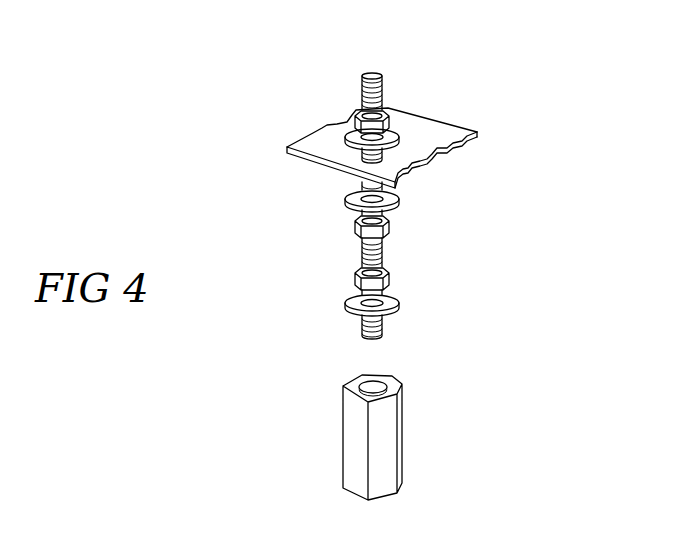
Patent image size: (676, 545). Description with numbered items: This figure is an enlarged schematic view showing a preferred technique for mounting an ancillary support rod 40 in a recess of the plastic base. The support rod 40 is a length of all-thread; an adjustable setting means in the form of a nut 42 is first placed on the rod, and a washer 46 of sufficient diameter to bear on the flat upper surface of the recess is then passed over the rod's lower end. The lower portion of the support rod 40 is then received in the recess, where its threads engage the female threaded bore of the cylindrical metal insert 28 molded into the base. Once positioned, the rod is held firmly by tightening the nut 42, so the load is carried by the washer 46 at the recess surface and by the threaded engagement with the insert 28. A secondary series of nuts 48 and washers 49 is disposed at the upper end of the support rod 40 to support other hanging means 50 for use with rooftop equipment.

The metal insert 28 is at (375, 385).
The support rod 40 is at (370, 76).
The nut 42 is at (354, 275).
The washer 46 is at (345, 304).
The nuts 48 is at (389, 118).
The washers 49 is at (348, 130).
The hanging means 50 is at (452, 132).